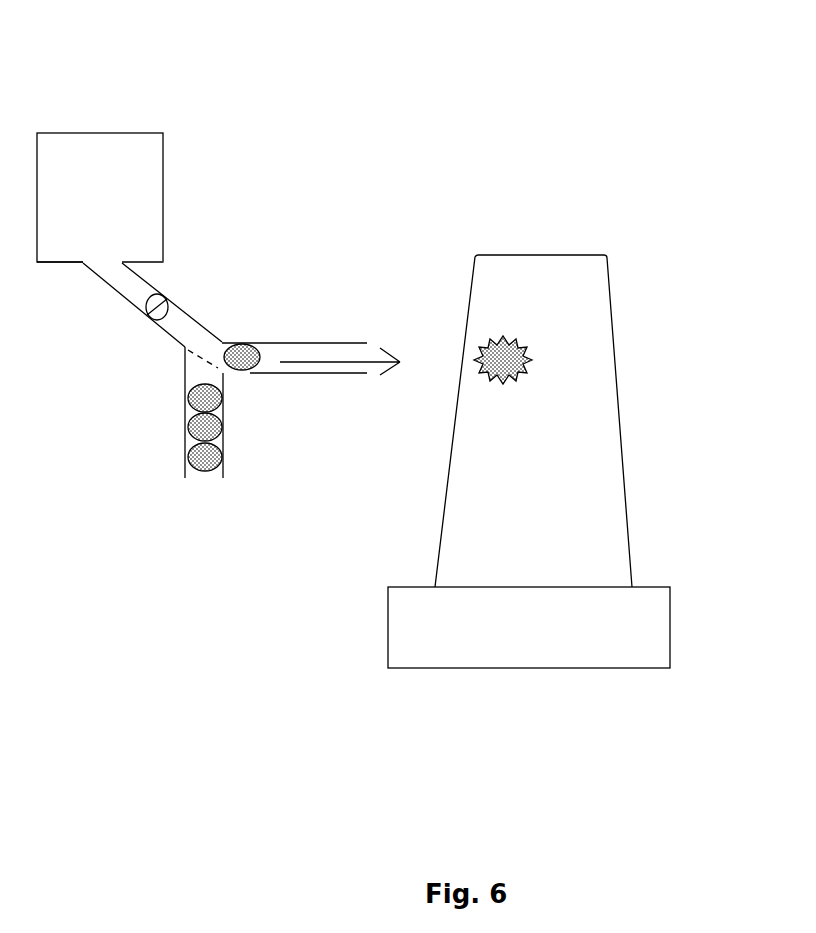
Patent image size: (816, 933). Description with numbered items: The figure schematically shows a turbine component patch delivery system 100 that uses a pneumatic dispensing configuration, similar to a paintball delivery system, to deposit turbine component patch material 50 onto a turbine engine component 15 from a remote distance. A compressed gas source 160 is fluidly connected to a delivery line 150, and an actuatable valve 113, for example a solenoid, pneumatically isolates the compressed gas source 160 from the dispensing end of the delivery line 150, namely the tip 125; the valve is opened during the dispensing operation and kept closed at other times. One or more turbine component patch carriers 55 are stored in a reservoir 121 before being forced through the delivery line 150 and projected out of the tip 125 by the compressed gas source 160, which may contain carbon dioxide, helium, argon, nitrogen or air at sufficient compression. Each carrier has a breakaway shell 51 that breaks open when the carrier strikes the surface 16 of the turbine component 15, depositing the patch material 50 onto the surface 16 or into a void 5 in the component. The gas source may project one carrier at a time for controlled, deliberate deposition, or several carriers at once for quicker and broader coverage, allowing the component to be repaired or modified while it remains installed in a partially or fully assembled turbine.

The turbine component patch delivery system 100 is at (134, 96).
The compressed gas source 160 is at (163, 189).
The actuatable valve 113 is at (150, 313).
The reservoir 121 is at (183, 445).
The turbine component patch material 50 is at (205, 458).
The breakaway shell 51 is at (207, 473).
The delivery line 150 is at (270, 342).
The tip 125 is at (368, 342).
The turbine component patch carrier 55 is at (246, 382).
The turbine engine component 15 is at (622, 453).
The surface 16 is at (548, 502).
The void 5 is at (527, 335).